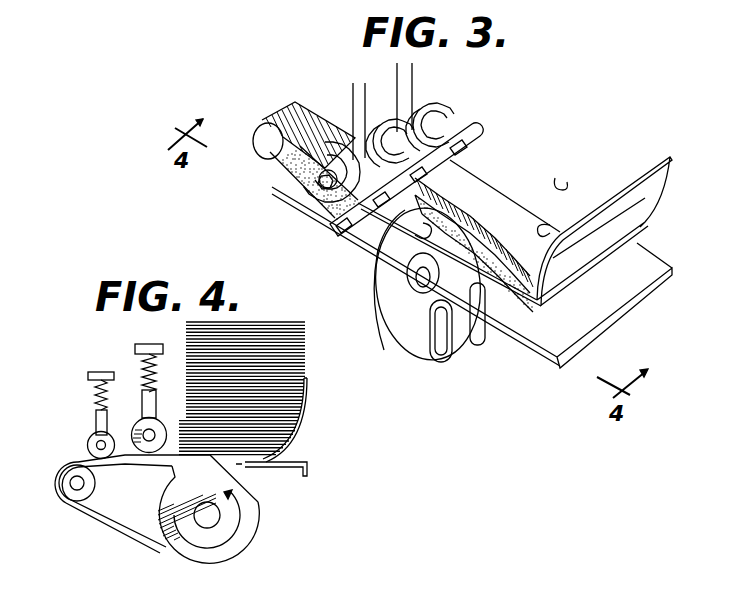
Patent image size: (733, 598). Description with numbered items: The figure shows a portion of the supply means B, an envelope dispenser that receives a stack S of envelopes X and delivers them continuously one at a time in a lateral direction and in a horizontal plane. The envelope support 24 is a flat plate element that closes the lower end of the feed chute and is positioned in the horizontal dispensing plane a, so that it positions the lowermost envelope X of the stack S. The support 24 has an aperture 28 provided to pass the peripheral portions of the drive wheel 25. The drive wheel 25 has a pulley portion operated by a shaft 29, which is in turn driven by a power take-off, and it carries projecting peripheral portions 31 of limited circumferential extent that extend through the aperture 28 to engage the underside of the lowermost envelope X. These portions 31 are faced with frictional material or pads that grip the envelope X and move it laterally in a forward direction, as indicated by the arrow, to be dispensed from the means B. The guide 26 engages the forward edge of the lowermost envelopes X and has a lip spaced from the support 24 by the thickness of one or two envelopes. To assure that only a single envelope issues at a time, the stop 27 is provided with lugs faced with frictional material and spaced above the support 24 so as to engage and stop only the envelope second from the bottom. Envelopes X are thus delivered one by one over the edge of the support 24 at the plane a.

In FIG. 3, the envelope support 24 is at (497, 177).
In FIG. 4, the envelope support 24 is at (298, 462).
In FIG. 3, the drive wheel 25 is at (427, 313).
In FIG. 4, the drive wheel 25 is at (250, 532).
In FIG. 3, the guide 26 is at (475, 136).
In FIG. 3, the stop 27 is at (446, 105).
In FIG. 4, the stop 27 is at (158, 420).
In FIG. 3, the aperture 28 is at (550, 225).
In FIG. 3, the shaft 29 is at (555, 178).
In FIG. 4, the shaft 29 is at (228, 517).
In FIG. 3, the projecting peripheral portion 31 is at (503, 322).
In FIG. 4, the projecting peripheral portion 31 is at (168, 477).
In FIG. 3, the supply means B is at (528, 173).
In FIG. 4, the supply means B is at (322, 458).
In FIG. 4, the stack S is at (277, 322).
In FIG. 4, the envelope X is at (311, 367).
In FIG. 4, the horizontal dispensing plane a is at (80, 453).